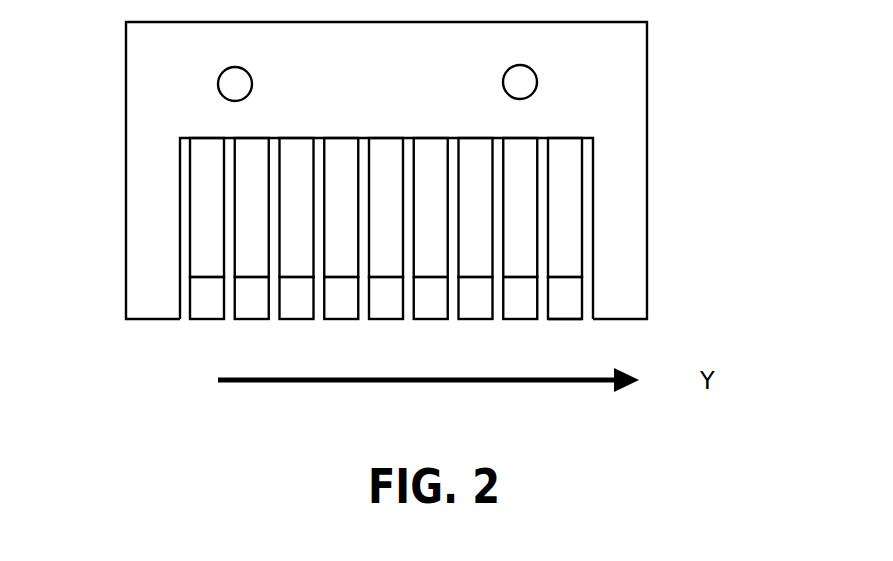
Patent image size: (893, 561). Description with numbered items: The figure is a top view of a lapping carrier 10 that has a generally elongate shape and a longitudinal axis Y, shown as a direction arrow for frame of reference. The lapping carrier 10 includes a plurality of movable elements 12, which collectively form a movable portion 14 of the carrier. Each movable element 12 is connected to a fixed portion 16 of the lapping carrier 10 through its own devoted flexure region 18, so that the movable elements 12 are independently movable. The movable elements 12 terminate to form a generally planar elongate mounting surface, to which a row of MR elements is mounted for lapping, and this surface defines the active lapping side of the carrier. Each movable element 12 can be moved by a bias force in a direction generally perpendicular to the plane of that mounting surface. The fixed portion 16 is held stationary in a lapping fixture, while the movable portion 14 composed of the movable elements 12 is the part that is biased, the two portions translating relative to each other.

The lapping carrier 10 is at (667, 75).
The movable elements 12 is at (298, 310).
The movable portion 14 is at (565, 327).
The fixed portion 16 is at (582, 96).
The flexure regions 18 is at (209, 238).